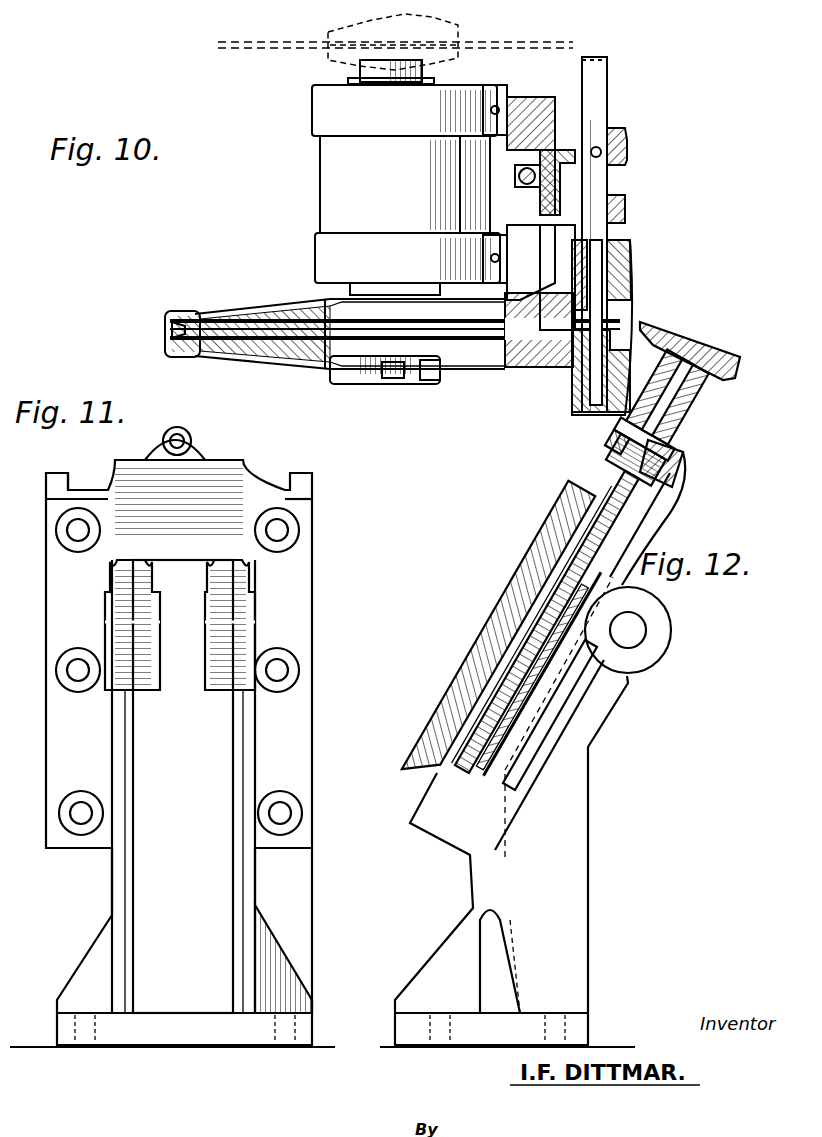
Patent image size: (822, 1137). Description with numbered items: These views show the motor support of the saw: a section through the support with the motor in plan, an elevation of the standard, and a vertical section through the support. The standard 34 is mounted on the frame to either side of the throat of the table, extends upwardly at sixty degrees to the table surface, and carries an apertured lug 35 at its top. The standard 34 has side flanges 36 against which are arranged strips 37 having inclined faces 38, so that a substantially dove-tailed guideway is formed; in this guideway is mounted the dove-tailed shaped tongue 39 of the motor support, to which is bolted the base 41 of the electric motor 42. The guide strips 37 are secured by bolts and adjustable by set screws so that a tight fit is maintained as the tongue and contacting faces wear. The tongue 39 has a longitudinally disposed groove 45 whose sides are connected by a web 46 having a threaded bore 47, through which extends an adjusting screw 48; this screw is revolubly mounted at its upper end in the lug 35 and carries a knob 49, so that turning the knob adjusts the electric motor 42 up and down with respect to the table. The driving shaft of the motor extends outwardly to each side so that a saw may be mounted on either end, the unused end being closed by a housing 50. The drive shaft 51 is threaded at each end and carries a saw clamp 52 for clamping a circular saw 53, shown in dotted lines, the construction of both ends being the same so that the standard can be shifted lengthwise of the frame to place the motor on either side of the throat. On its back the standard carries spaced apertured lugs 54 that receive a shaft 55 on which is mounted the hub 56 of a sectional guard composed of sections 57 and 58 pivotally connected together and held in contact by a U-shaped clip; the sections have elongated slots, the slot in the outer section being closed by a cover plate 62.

In FIG. 10, the standard 34 is at (596, 75).
In FIG. 11, the standard 34 is at (290, 629).
In FIG. 12, the standard 34 is at (568, 797).
In FIG. 11, the apertured lug 35 is at (205, 446).
In FIG. 12, the apertured lug 35 is at (662, 448).
In FIG. 10, the side flanges 36 is at (540, 110).
In FIG. 11, the side flanges 36 is at (312, 481).
In FIG. 12, the side flanges 36 is at (655, 505).
In FIG. 10, the strips 37 is at (560, 100).
In FIG. 10, the inclined faces 38 is at (560, 251).
In FIG. 10, the dove-tailed shaped tongue 39 is at (575, 120).
In FIG. 12, the dove-tailed shaped tongue 39 is at (432, 738).
In FIG. 10, the base 41 is at (482, 85).
In FIG. 10, the electric motor 42 is at (391, 190).
In FIG. 10, the longitudinally disposed groove 45 is at (460, 165).
In FIG. 12, the web 46 is at (575, 650).
In FIG. 12, the threaded bore 47 is at (522, 632).
In FIG. 10, the adjusting screw 48 is at (625, 140).
In FIG. 12, the adjusting screw 48 is at (604, 492).
In FIG. 12, the knob 49 is at (690, 365).
In FIG. 10, the housing 50 is at (375, 75).
In FIG. 10, the drive shaft 51 is at (432, 382).
In FIG. 10, the saw clamp 52 is at (460, 35).
In FIG. 10, the circular saw 53 is at (242, 46).
In FIG. 10, the spaced apertured lugs 54 is at (625, 205).
In FIG. 11, the spaced apertured lugs 54 is at (220, 673).
In FIG. 12, the spaced apertured lugs 54 is at (655, 650).
In FIG. 10, the shaft 55 is at (600, 100).
In FIG. 12, the shaft 55 is at (636, 629).
In FIG. 10, the hub 56 is at (625, 300).
In FIG. 10, the guard section 57 is at (218, 318).
In FIG. 10, the guard section 58 is at (172, 333).
In FIG. 10, the cover plate 62 is at (385, 376).